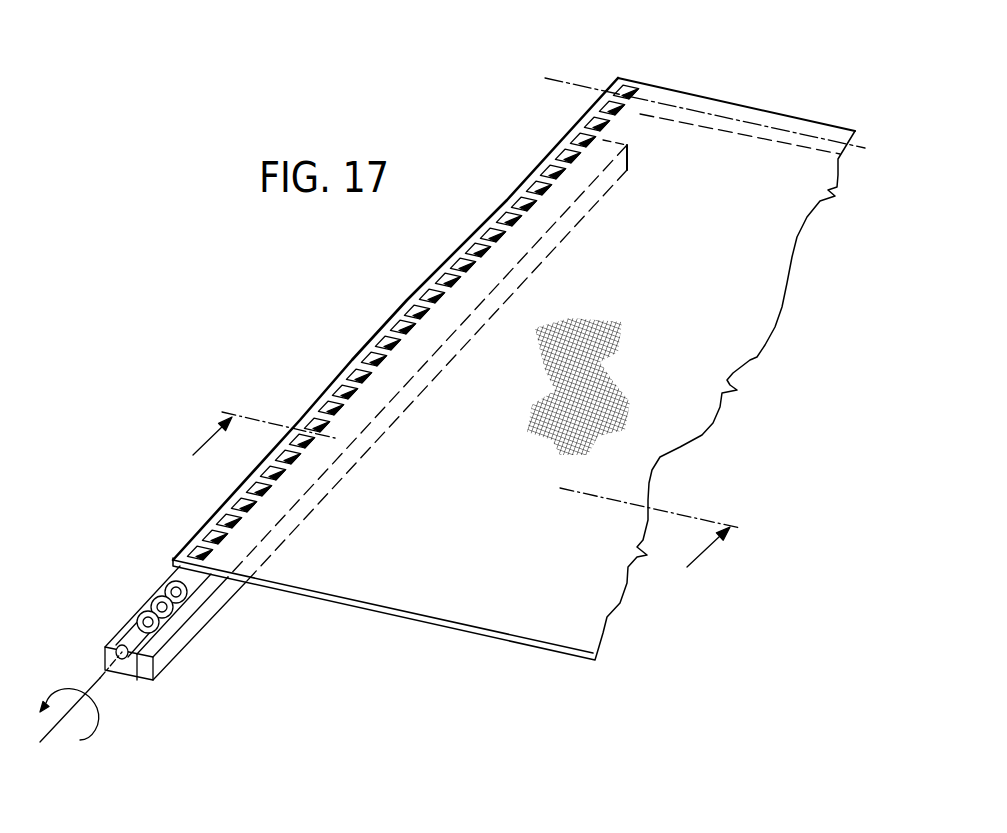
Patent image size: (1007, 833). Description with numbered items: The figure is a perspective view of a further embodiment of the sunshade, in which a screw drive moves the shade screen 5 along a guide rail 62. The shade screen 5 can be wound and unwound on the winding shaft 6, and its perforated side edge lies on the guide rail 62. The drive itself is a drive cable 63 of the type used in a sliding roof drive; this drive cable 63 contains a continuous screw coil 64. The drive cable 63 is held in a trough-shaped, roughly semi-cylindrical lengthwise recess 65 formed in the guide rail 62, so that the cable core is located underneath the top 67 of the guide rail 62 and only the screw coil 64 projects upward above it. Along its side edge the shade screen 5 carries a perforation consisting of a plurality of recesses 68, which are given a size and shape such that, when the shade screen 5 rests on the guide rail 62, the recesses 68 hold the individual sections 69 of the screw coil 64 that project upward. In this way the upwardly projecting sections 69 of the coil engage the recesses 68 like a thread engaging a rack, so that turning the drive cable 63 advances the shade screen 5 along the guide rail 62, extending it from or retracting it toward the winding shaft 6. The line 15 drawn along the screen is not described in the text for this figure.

The shade screen 5 is at (673, 358).
The winding shaft 6 is at (763, 102).
The fold line 15 is at (566, 78).
The guide rail 62 is at (95, 653).
The drive cable 63 is at (118, 625).
The screw coil 64 is at (163, 608).
The lengthwise recess 65 is at (136, 678).
The top of the guide rail 67 is at (190, 608).
The recesses 68 is at (603, 113).
The sections of the screw coil 69 is at (477, 256).